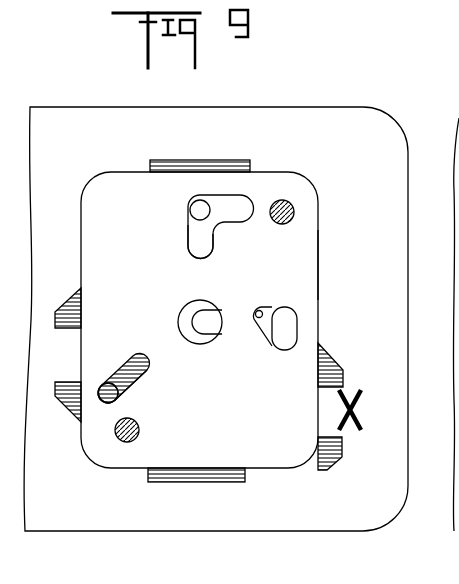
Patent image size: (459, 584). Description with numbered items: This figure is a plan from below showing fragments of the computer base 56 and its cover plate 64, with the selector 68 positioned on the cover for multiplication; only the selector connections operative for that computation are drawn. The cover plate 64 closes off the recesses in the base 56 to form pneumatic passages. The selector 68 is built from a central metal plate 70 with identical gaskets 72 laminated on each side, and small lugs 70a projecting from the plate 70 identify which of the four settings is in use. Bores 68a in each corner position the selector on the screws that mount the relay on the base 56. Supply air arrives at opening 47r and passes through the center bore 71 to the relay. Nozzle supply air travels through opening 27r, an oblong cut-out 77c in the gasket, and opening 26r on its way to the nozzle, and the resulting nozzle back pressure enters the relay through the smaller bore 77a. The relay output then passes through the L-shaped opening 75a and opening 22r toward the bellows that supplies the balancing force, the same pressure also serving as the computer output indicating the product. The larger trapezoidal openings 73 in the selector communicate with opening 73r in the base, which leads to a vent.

The base 56 is at (92, 104).
The cover plate 64 is at (72, 512).
The selector 68 is at (108, 168).
The bores 68a is at (294, 212).
The gaskets 72 is at (303, 260).
The central metal plate 70 is at (204, 482).
The lugs 70a is at (325, 368).
The opening 22r is at (200, 210).
The L-shaped opening 75a is at (196, 238).
The center bore 71 is at (190, 311).
The opening 47r is at (200, 325).
The trapezoidal openings 73 is at (258, 313).
The opening 73r is at (287, 337).
The opening 27r is at (130, 358).
The oblong cut-outs 77c is at (138, 382).
The opening 26r is at (114, 398).
The smaller bores 77a is at (149, 401).